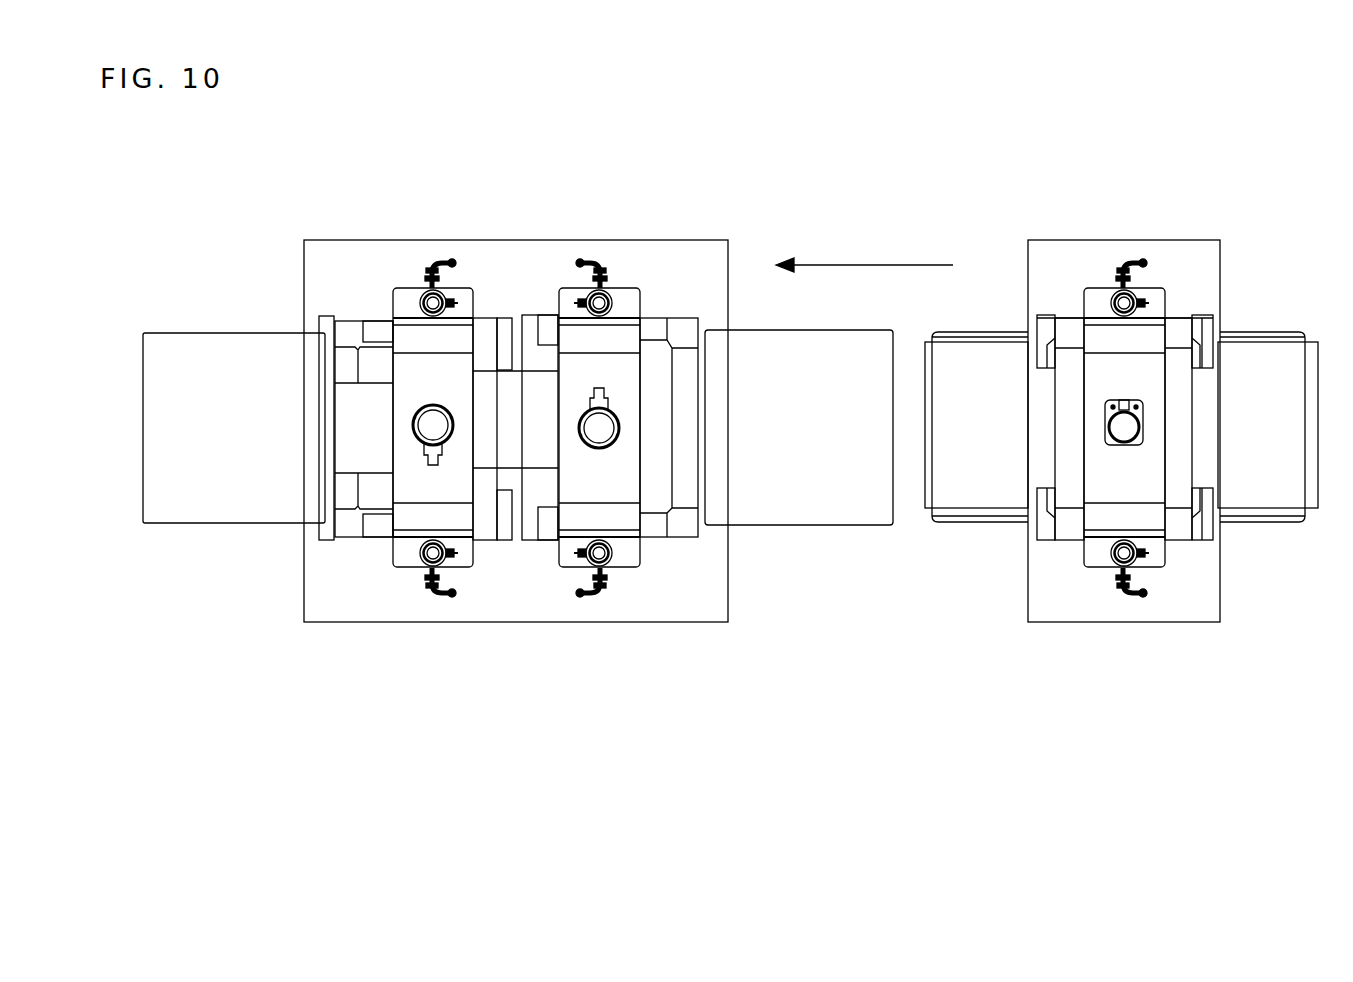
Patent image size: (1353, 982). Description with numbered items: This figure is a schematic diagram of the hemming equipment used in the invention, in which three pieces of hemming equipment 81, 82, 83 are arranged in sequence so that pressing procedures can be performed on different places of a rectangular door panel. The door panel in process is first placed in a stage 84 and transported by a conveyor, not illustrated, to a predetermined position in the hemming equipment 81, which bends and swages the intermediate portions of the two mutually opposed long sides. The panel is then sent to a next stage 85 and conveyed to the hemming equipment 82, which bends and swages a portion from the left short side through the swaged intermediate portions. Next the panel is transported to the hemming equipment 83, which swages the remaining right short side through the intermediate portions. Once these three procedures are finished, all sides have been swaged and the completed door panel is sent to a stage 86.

The hemming equipment 81 is at (1100, 545).
The hemming equipment 82 is at (573, 560).
The hemming equipment 83 is at (405, 560).
The stage 84 is at (1266, 495).
The stage 85 is at (803, 497).
The stage 86 is at (225, 508).